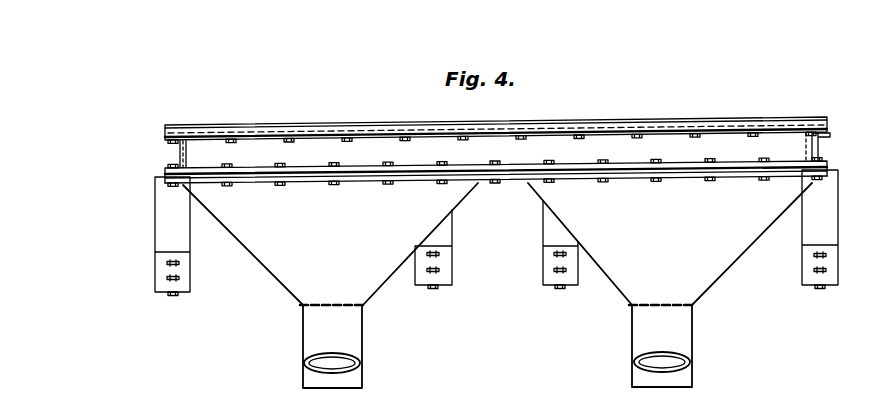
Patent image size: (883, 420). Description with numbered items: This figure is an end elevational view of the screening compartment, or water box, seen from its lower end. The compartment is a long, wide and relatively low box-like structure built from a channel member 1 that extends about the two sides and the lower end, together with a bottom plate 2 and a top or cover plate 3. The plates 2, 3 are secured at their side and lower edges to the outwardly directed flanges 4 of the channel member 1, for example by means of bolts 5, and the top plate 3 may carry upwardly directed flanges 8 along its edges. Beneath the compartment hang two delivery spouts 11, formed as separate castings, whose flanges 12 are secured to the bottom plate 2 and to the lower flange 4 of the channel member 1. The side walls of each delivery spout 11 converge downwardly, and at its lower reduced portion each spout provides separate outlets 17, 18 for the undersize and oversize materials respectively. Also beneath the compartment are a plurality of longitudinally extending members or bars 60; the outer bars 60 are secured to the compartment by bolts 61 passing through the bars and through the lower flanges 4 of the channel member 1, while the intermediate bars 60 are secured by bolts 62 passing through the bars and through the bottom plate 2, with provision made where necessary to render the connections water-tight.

The channel member 1 is at (184, 152).
The bottom plate 2 is at (634, 177).
The top plate 3 is at (573, 131).
The outwardly directed flanges 4 is at (276, 163).
The bolts 5 is at (378, 163).
The upwardly directed flanges 8 is at (314, 125).
The delivery spout 11 is at (288, 278).
The flanges 12 is at (545, 178).
The outlet 17 is at (310, 378).
The outlet 18 is at (352, 342).
The longitudinally extending members or bars 60 is at (176, 257).
The bolts 61 is at (172, 296).
The bolts 62 is at (433, 289).